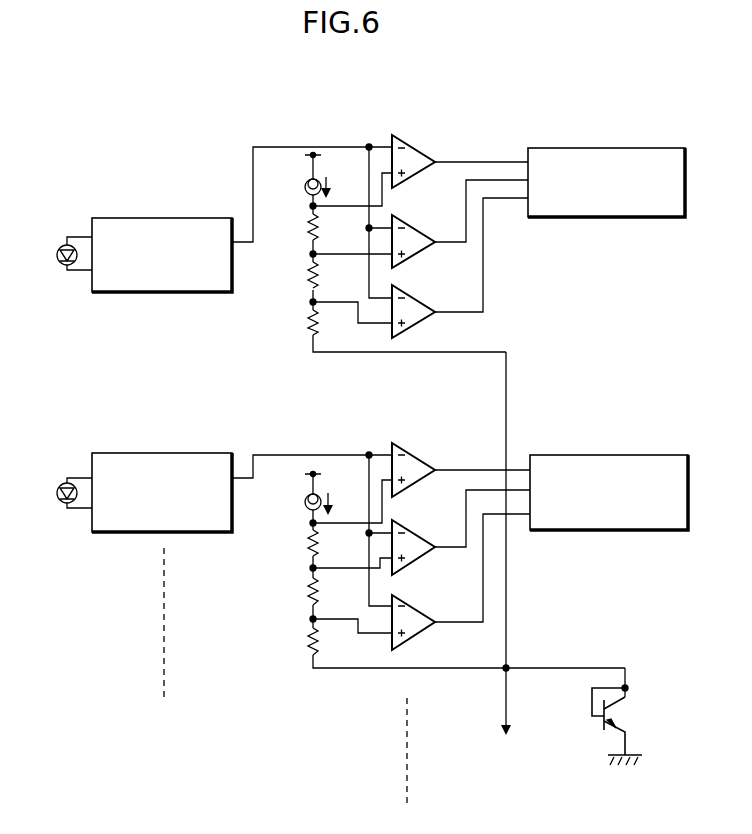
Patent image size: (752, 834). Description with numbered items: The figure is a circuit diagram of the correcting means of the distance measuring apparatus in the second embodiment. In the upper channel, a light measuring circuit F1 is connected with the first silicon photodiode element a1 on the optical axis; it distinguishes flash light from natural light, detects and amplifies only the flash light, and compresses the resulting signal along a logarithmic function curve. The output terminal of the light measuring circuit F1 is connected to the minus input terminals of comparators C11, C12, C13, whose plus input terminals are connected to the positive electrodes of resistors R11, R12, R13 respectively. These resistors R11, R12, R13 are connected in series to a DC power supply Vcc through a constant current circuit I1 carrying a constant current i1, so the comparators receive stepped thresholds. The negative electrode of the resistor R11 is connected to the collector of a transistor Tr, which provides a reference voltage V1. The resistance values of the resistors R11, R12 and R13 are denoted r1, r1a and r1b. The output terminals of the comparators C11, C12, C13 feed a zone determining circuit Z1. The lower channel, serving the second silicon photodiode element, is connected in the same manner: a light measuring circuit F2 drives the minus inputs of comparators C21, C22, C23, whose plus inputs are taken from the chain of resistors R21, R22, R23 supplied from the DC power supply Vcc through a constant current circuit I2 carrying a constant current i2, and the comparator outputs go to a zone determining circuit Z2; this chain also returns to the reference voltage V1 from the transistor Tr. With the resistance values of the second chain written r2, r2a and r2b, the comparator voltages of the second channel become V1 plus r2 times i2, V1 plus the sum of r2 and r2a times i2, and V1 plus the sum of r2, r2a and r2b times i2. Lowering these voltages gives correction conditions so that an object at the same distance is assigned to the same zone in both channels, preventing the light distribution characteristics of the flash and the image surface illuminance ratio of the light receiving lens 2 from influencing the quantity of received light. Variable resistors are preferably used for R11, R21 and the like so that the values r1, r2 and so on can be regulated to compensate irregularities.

The light measuring circuit F1 is at (120, 218).
The first silicon photodiode element a1 is at (62, 264).
The constant current circuit I1 is at (304, 187).
The constant current i1 is at (334, 187).
The resistor R13 is at (291, 229).
The resistor R12 is at (291, 276).
The resistor R11 is at (291, 323).
The resistance value r1b is at (337, 239).
The resistance value r1a is at (337, 285).
The resistance value r1 is at (333, 329).
The comparator C13 is at (417, 139).
The comparator C12 is at (414, 219).
The comparator C11 is at (420, 289).
The zone determining circuit Z1 is at (632, 148).
The DC power supply Vcc is at (270, 318).
The light measuring circuit F2 is at (120, 453).
The light receiving lens 2 is at (66, 506).
The second constant current source I2 is at (304, 503).
The constant current i2 is at (338, 506).
The resistor R23 is at (291, 545).
The resistor R22 is at (291, 592).
The resistor R21 is at (291, 641).
The resistance value r2b is at (342, 553).
The resistance value r2a is at (342, 599).
The resistance value r2 is at (338, 646).
The comparator C23 is at (416, 450).
The comparator C22 is at (414, 526).
The comparator C21 is at (418, 601).
The second zone determining circuit Z2 is at (628, 455).
The reference voltage V1 is at (646, 678).
The transistor Tr is at (628, 722).